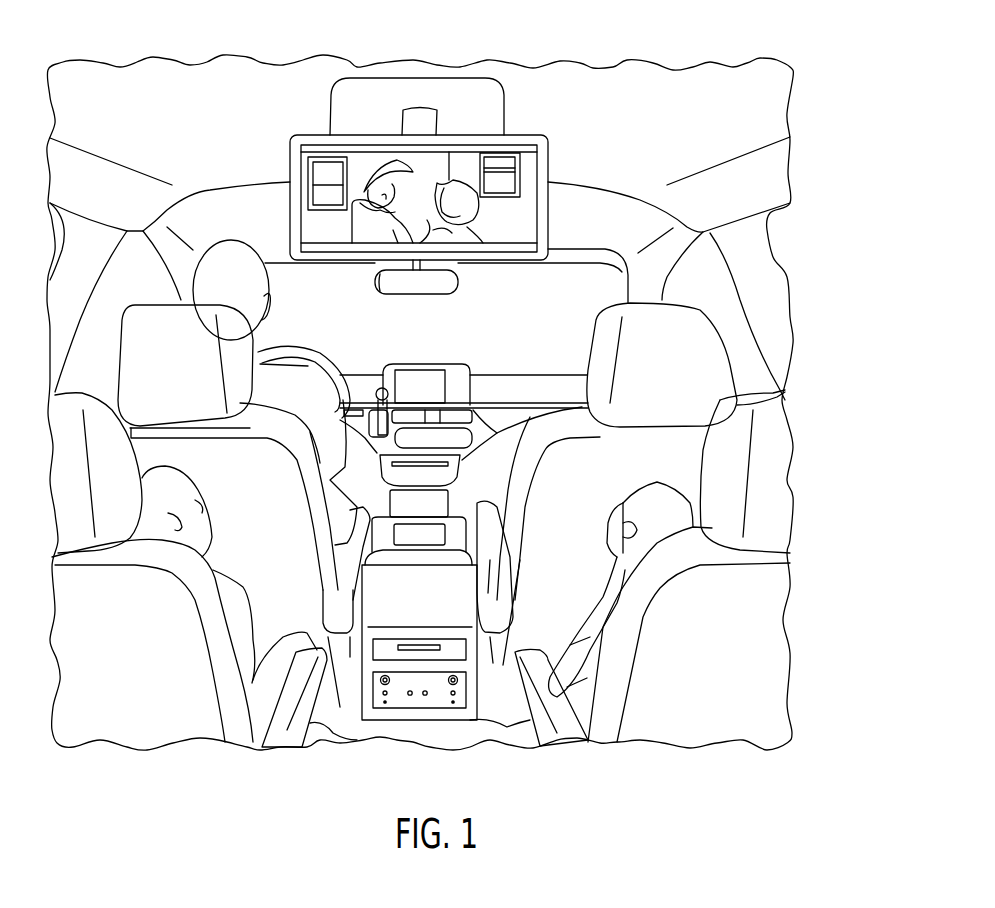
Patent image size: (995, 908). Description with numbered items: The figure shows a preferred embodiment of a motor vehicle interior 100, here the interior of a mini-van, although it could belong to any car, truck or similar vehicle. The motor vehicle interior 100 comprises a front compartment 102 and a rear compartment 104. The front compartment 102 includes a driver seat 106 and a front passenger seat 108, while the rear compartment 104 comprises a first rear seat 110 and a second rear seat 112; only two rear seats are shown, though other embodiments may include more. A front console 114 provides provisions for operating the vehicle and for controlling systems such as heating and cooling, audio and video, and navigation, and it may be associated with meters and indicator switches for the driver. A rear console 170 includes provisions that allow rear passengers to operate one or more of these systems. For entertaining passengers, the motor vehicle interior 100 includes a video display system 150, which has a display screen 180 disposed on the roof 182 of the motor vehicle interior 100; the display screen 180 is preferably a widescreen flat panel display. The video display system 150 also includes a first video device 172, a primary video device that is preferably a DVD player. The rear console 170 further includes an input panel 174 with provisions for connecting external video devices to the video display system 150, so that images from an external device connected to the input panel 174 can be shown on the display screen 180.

The motor vehicle interior 100 is at (723, 65).
The front compartment 102 is at (716, 280).
The rear compartment 104 is at (375, 722).
The driver seat 106 is at (267, 493).
The front passenger seat 108 is at (600, 490).
The first rear seat 110 is at (143, 631).
The second rear seat 112 is at (716, 630).
The front console 114 is at (480, 394).
The video display system 150 is at (560, 161).
The rear console 170 is at (420, 682).
The first video device 172 is at (382, 648).
The input panel 174 is at (437, 710).
The display screen 180 is at (525, 145).
The roof 182 is at (270, 128).